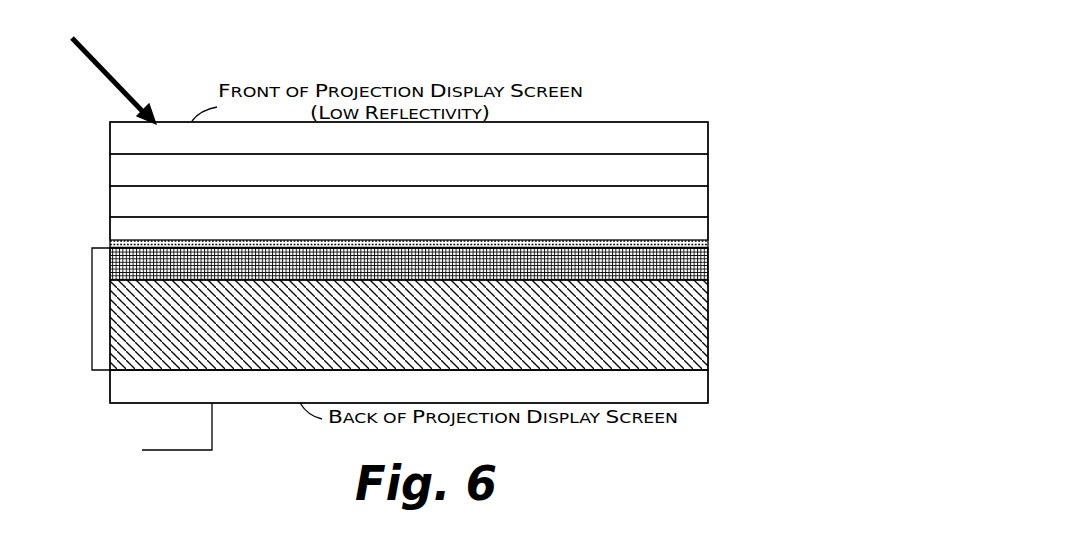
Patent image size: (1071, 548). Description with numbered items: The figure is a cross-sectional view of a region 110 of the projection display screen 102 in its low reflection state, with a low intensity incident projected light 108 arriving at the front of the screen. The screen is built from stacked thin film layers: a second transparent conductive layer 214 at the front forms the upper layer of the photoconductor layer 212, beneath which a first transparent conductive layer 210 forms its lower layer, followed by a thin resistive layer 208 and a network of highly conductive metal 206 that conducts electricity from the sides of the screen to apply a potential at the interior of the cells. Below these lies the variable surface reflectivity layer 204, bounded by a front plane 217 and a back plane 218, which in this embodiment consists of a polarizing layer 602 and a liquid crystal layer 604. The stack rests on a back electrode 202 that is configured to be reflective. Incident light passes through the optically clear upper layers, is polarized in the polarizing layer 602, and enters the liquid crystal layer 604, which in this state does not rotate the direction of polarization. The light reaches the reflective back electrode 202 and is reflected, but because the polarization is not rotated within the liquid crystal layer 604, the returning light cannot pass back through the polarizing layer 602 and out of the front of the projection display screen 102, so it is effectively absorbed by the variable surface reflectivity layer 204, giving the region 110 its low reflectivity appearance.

The projection display screen 102 is at (708, 122).
The incident projected light 108 is at (93, 50).
The region 110 is at (262, 463).
The back electrode 202 is at (409, 386).
The variable surface reflectivity layer 204 is at (92, 312).
The network of highly conductive metal 206 is at (236, 239).
The thin resistive layer 208 is at (409, 229).
The first transparent conductive layer 210 is at (409, 201).
The photoconductor layer 212 is at (409, 170).
The second transparent conductive layer 214 is at (409, 138).
The front plane 217 is at (110, 243).
The back plane 218 is at (708, 372).
The polarizing layer 602 is at (709, 260).
The liquid crystal layer 604 is at (692, 335).